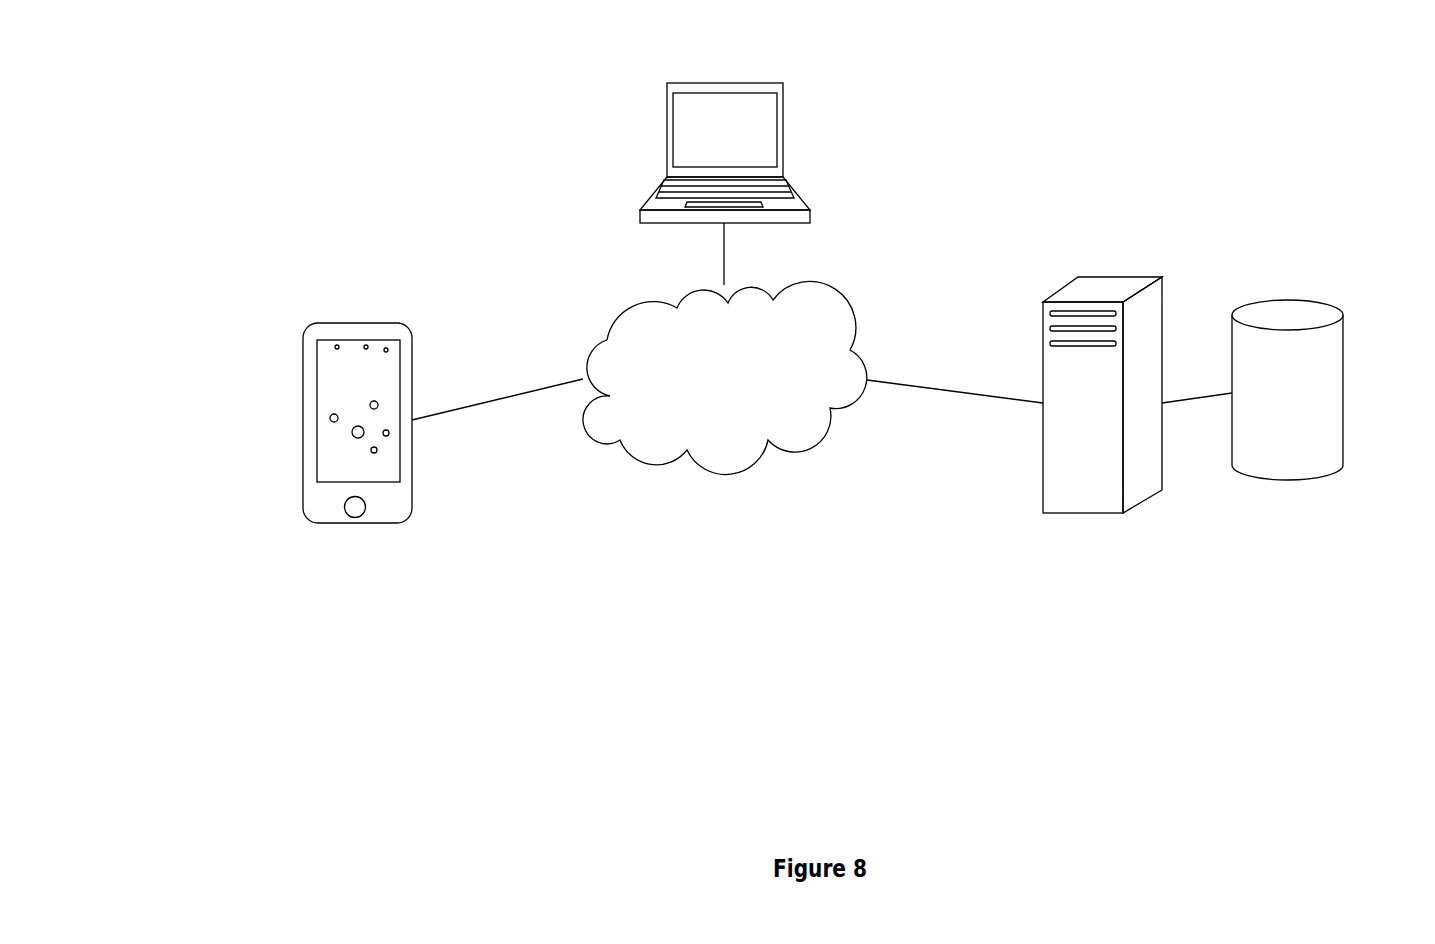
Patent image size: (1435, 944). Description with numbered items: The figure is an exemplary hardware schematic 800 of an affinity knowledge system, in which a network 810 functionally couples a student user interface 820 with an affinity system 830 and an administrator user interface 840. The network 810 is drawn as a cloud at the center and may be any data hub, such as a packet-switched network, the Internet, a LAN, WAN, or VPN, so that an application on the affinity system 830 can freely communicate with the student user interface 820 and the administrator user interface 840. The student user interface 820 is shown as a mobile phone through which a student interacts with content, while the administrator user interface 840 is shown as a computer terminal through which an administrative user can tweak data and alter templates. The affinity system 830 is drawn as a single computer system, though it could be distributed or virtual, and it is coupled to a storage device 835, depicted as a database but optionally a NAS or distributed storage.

The hardware schematic 800 is at (90, 63).
The network 810 is at (680, 462).
The student user interface 820 is at (303, 498).
The affinity system 830 is at (1042, 497).
The storage device 835 is at (1343, 425).
The administrator user interface 840 is at (667, 147).